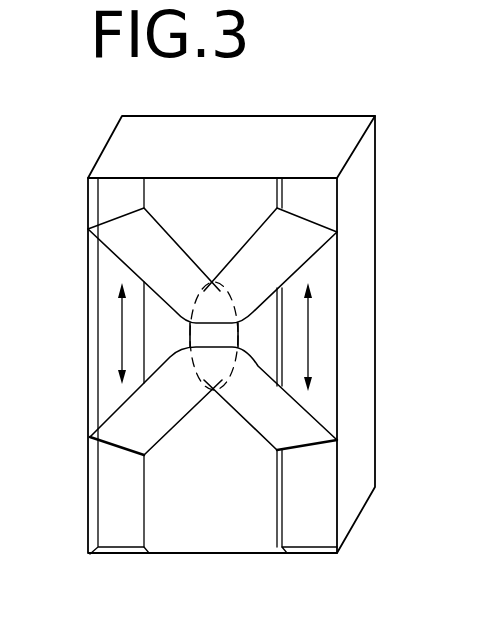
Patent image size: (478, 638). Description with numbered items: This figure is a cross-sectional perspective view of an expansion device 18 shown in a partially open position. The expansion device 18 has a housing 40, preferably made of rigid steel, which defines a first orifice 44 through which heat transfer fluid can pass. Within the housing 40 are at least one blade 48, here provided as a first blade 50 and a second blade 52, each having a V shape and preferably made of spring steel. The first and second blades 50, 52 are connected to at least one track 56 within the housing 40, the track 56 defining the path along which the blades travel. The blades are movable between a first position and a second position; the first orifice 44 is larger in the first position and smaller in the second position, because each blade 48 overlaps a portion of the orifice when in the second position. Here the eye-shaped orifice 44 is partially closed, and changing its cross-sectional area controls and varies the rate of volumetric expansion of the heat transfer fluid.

The expansion device 18 is at (62, 446).
The housing 40 is at (348, 238).
The first orifice 44 is at (197, 333).
The blade 48 is at (275, 267).
The first blade 50 is at (255, 228).
The second blade 52 is at (315, 425).
The track 56 is at (117, 492).